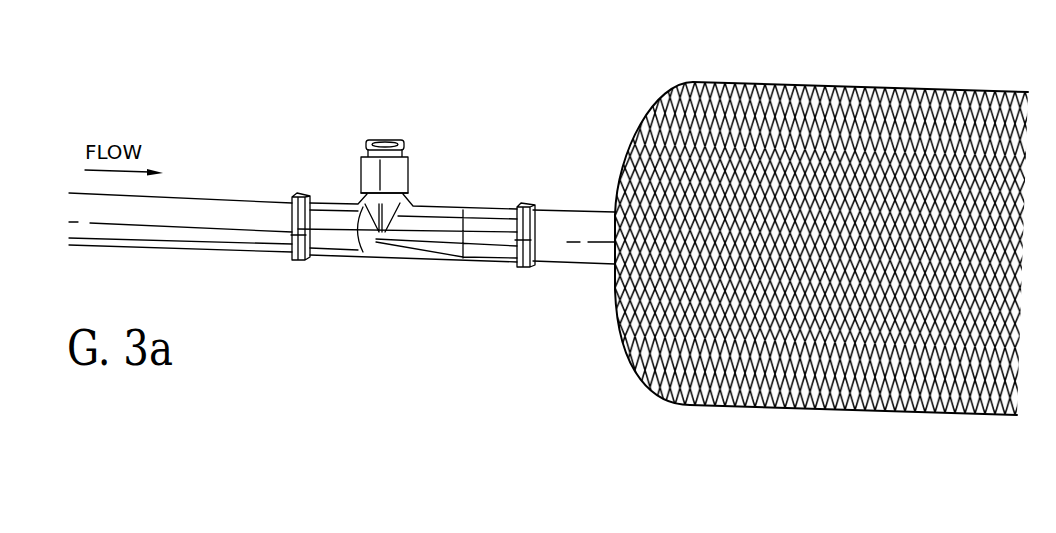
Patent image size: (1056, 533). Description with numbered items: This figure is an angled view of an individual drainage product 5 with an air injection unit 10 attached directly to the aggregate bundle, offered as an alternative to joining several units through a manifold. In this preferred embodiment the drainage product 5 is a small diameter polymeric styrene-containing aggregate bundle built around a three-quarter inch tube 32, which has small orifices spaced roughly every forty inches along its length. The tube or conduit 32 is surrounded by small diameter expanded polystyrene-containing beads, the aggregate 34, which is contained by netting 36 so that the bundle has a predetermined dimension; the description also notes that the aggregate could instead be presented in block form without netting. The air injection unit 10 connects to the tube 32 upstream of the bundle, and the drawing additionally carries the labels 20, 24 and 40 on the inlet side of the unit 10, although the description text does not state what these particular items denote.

The drainage product 5 is at (833, 83).
The air injection unit 10 is at (443, 227).
The inlet conduit 20 is at (180, 126).
The inlet fitting 24 is at (376, 138).
The tube 32 is at (555, 225).
The aggregate 34 is at (652, 332).
The netting 36 is at (693, 82).
The nozzle 40 is at (376, 5).